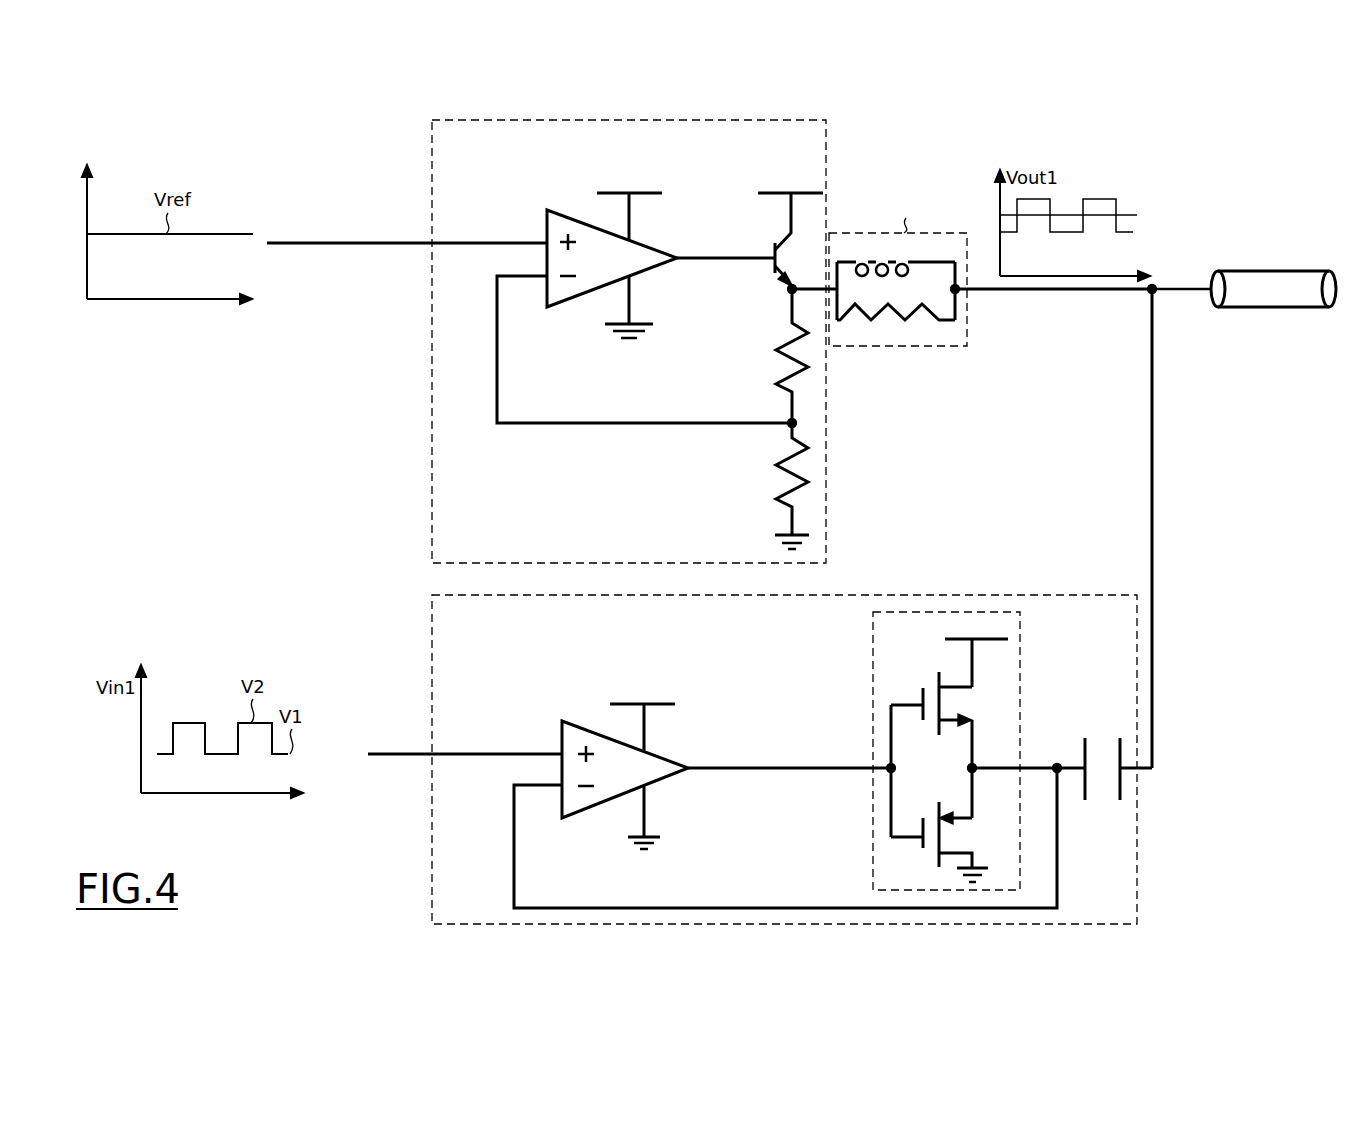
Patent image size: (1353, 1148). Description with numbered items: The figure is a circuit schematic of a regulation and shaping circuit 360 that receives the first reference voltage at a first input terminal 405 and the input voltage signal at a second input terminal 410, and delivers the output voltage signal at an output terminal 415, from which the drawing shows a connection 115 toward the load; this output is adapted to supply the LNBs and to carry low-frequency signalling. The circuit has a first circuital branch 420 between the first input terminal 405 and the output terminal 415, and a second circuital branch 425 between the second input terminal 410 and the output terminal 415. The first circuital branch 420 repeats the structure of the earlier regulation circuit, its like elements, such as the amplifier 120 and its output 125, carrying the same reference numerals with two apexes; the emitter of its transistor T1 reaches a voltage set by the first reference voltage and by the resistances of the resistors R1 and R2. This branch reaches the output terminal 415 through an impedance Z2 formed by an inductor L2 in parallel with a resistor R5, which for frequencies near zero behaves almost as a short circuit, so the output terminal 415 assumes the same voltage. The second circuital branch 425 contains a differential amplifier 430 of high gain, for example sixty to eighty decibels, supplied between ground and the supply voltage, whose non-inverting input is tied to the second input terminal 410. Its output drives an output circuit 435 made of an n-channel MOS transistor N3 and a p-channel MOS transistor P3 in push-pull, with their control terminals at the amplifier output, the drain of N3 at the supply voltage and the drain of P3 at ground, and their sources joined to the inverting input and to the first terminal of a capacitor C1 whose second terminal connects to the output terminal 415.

The regulation and shaping circuit 360 is at (396, 143).
The first circuital branch 420 is at (432, 305).
The first input terminal 405 is at (316, 243).
The operational amplifier 120 is at (555, 210).
The amplifier output line 125 is at (697, 262).
The transistor T1 is at (790, 232).
The resistor R2 is at (769, 356).
The resistor R1 is at (771, 486).
The impedance Z2 is at (879, 270).
The inductor L2 is at (896, 257).
The resistor R5 is at (896, 324).
The output terminal 415 is at (1178, 292).
The transmission line / coaxial cable 115 is at (1286, 272).
The second circuital branch 425 is at (432, 629).
The second input terminal 410 is at (391, 754).
The differential amplifier 430 is at (574, 721).
The output circuit 435 is at (873, 746).
The n-channel MOS transistor N3 is at (941, 720).
The p-channel MOS transistor P3 is at (940, 825).
The capacitor C1 is at (1118, 746).